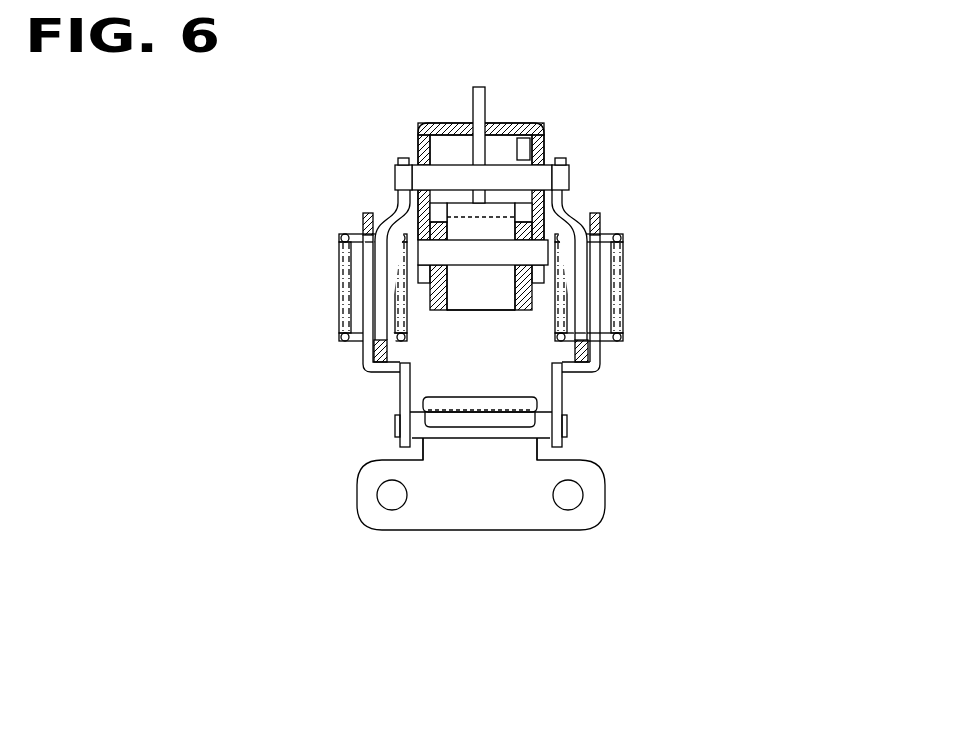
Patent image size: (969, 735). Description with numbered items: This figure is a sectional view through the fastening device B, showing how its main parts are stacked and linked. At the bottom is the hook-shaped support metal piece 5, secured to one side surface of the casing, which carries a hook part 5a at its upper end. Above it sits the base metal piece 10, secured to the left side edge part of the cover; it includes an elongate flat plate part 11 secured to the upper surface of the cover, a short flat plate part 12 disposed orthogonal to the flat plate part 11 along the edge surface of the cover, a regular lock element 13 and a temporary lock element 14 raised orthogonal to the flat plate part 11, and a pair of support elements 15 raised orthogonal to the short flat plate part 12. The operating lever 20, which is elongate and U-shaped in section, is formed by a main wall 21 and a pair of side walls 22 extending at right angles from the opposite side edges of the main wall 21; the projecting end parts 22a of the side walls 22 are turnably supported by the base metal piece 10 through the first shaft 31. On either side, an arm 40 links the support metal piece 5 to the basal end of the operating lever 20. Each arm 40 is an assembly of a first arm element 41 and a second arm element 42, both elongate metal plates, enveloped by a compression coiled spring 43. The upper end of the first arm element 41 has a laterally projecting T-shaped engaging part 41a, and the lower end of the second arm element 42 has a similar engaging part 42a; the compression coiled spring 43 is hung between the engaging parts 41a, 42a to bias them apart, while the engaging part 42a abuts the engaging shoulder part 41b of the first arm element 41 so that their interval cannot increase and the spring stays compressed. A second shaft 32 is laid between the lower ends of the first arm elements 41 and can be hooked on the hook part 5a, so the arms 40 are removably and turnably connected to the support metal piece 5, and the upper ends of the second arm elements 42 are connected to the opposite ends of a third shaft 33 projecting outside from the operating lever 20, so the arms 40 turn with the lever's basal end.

The support metal piece 5 is at (481, 520).
The hook part 5a is at (475, 428).
The base metal piece 10 is at (500, 314).
The flat plate part 11 is at (440, 203).
The short flat plate part 12 is at (478, 300).
The regular lock element 13 is at (485, 86).
The temporary lock element 14 is at (507, 125).
The support elements 15 is at (430, 273).
The operating lever 20 is at (544, 193).
The main wall 21 is at (435, 122).
The side walls 22 is at (418, 147).
The projecting end parts 22a is at (398, 373).
The first shaft 31 is at (513, 311).
The second shaft 32 is at (487, 440).
The third shaft 33 is at (571, 178).
The arms 40 is at (483, 285).
The first arm element 41 is at (637, 315).
The engaging part 41a is at (603, 220).
The engaging shoulder part 41b is at (580, 378).
The second arm element 42 is at (571, 212).
The engaging part 42a is at (583, 373).
The compression coiled spring 43 is at (624, 272).
The fastening device B is at (498, 259).